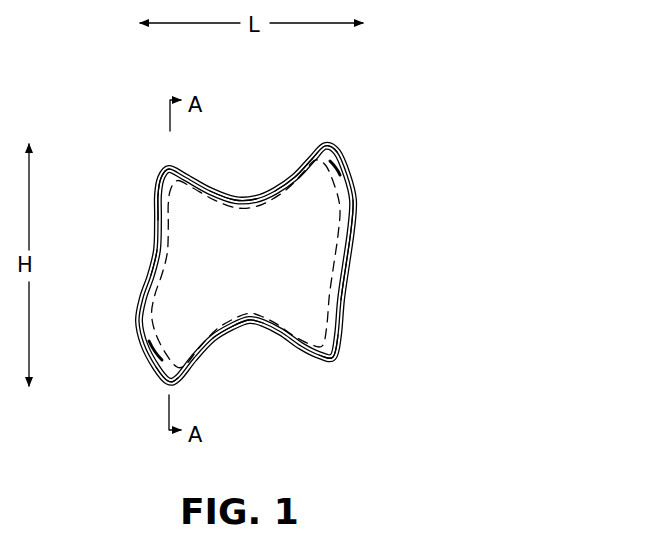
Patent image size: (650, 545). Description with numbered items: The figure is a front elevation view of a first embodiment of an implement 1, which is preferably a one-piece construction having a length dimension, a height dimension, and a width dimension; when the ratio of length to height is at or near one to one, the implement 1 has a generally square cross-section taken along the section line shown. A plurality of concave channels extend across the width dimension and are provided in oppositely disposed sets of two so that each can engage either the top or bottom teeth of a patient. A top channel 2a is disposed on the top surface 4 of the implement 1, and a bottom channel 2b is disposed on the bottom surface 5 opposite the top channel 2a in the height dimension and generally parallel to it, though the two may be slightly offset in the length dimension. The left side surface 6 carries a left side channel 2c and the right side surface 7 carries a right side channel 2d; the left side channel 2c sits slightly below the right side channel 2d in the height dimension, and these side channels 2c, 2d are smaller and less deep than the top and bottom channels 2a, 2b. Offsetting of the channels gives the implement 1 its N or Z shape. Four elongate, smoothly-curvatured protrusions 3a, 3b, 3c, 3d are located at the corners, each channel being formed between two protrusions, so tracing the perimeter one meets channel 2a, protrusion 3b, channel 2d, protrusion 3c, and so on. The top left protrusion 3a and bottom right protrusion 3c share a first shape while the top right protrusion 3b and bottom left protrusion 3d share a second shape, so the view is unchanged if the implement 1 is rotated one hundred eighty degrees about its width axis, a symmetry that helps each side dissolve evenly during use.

The implement 1 is at (459, 118).
The top channel 2a is at (244, 193).
The bottom channel 2b is at (252, 339).
The left side channel 2c is at (149, 285).
The right side channel 2d is at (345, 278).
The top left protrusion 3a is at (163, 167).
The top right protrusion 3b is at (346, 150).
The bottom right protrusion 3c is at (334, 360).
The bottom left protrusion 3d is at (150, 365).
The top surface 4 is at (291, 180).
The bottom surface 5 is at (218, 341).
The left side surface 6 is at (153, 206).
The right side surface 7 is at (359, 232).